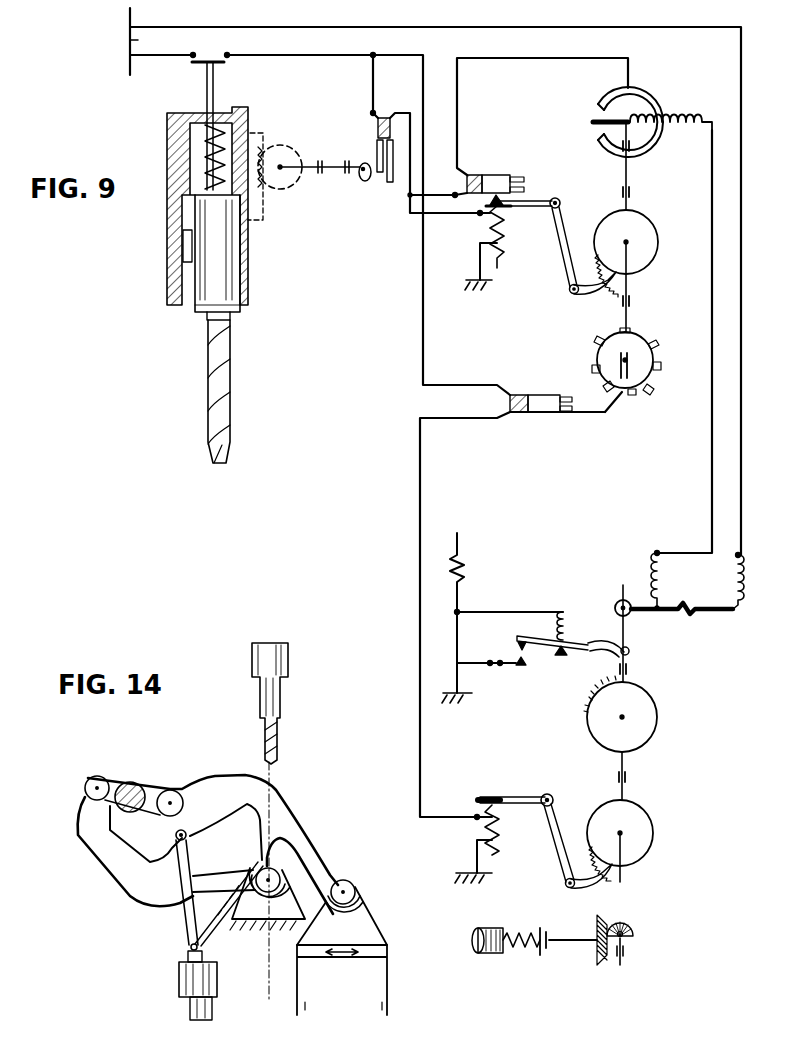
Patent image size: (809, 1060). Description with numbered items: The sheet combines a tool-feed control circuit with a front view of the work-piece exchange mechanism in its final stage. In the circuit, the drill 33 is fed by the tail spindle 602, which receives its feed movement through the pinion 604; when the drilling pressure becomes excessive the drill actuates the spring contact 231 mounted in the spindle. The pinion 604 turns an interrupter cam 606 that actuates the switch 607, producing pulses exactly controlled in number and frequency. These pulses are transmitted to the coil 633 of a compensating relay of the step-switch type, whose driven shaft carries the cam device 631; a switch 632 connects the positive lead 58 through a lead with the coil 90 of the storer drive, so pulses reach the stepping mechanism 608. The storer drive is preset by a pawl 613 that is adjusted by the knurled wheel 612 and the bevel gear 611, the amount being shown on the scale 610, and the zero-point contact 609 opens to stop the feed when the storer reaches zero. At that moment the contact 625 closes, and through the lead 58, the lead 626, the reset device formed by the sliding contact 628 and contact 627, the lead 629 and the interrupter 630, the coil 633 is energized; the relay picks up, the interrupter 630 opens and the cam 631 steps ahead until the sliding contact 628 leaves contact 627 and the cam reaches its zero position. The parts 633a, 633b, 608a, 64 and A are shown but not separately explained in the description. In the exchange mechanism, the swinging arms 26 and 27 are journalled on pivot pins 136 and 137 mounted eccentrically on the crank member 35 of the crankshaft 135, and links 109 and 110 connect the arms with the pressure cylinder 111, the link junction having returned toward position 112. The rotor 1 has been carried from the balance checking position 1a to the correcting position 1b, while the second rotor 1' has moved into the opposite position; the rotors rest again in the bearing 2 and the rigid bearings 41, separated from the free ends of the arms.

In FIG. 9, the positive lead 58 is at (145, 44).
In FIG. 9, the spring contact 231 is at (217, 53).
In FIG. 9, the tail spindle 602 is at (248, 266).
In FIG. 9, the drilling machine 33 is at (216, 360).
In FIG. 14, the drilling machine 33 is at (279, 735).
In FIG. 9, the pinion 604 is at (293, 152).
In FIG. 9, the interrupter cam 606 is at (360, 180).
In FIG. 9, the switch 607 is at (389, 180).
In FIG. 9, the lead 629 is at (565, 61).
In FIG. 9, the contact of reset device 627 is at (652, 109).
In FIG. 9, the sliding contact 628 is at (589, 127).
In FIG. 9, the interrupter 630 is at (496, 180).
In FIG. 9, the pawl lever 633a is at (563, 220).
In FIG. 9, the ratchet wheel 633b is at (659, 247).
In FIG. 9, the coil of compensating relay 633 is at (501, 235).
In FIG. 9, the ground 64 is at (487, 281).
In FIG. 9, the cam device 631 is at (645, 349).
In FIG. 9, the switch 632 is at (545, 402).
In FIG. 9, the lead 626 is at (712, 379).
In FIG. 9, the resistor A is at (462, 566).
In FIG. 9, the zero-point contact 609 is at (515, 654).
In FIG. 9, the pawl 613 is at (600, 640).
In FIG. 9, the contact 625 is at (713, 610).
In FIG. 9, the scale 610 is at (655, 726).
In FIG. 9, the stepping mechanism 608 is at (560, 816).
In FIG. 9, the ratchet wheel 608a is at (657, 842).
In FIG. 9, the coil 90 is at (501, 833).
In FIG. 9, the knurled wheel 612 is at (472, 936).
In FIG. 9, the bevel gear 611 is at (615, 953).
In FIG. 14, the swinging arm 27 is at (304, 823).
In FIG. 14, the swinging arm 26 is at (128, 889).
In FIG. 14, the pivot pin 136 is at (97, 775).
In FIG. 14, the crankshaft 135 is at (133, 789).
In FIG. 14, the pivot pin 137 is at (171, 797).
In FIG. 14, the crank member 35 is at (156, 807).
In FIG. 14, the link 110 is at (186, 912).
In FIG. 14, the link 109 is at (209, 935).
In FIG. 14, the junction point position 112 is at (187, 945).
In FIG. 14, the pressure cylinder 111 is at (179, 988).
In FIG. 14, the rotor 1 is at (278, 845).
In FIG. 14, the balance correcting position 1b is at (275, 879).
In FIG. 14, the second rotor 1' is at (347, 883).
In FIG. 14, the balance checking position 1a is at (376, 891).
In FIG. 14, the bearings 41 is at (267, 917).
In FIG. 14, the bearing 2 is at (388, 953).